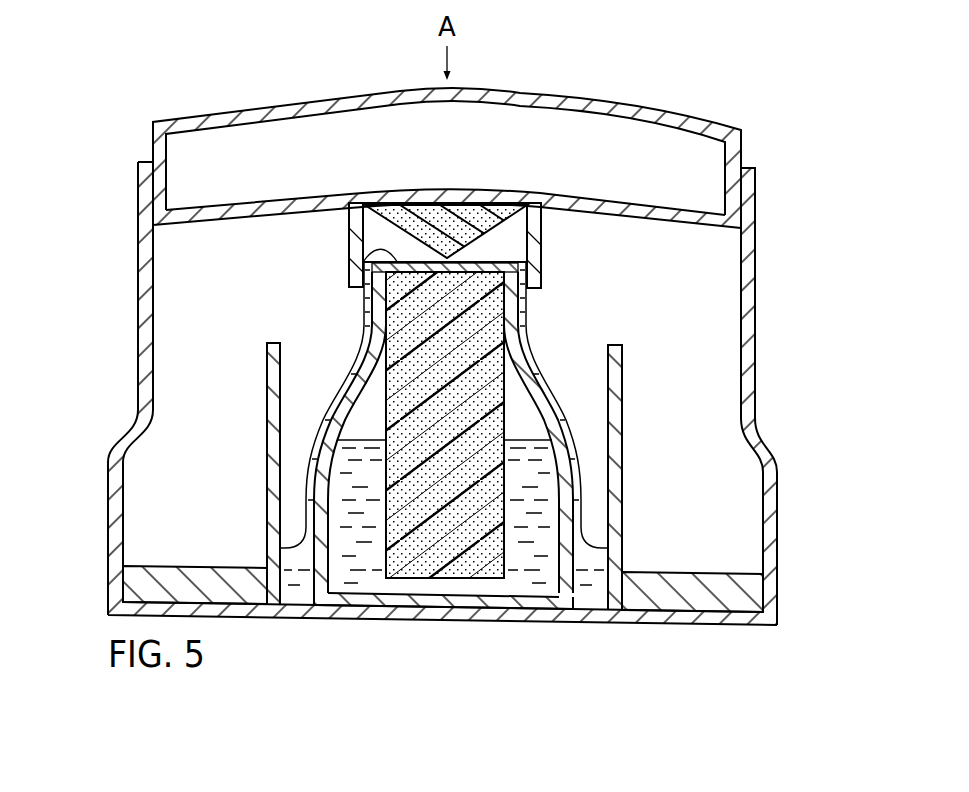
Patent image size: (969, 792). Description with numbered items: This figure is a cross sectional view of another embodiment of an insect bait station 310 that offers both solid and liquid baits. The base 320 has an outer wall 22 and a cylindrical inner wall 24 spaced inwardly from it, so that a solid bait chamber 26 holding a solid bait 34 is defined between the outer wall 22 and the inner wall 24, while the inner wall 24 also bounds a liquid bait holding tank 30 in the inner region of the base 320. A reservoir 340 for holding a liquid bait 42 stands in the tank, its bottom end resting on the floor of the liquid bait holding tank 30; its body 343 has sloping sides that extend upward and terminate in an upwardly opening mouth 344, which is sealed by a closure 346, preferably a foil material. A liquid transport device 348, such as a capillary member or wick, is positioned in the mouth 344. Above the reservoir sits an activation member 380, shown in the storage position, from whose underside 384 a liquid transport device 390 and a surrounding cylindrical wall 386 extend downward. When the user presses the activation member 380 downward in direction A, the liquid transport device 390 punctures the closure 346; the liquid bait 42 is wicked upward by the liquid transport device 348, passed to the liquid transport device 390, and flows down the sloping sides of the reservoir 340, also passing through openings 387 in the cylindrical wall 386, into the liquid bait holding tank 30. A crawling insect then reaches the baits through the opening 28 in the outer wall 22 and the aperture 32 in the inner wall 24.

The outer wall 22 is at (770, 497).
The inner wall 24 is at (620, 386).
The solid bait chamber 26 is at (723, 472).
The opening 28 is at (93, 538).
The liquid bait holding tank 30 is at (586, 348).
The aperture 32 is at (621, 520).
The solid bait 34 is at (133, 590).
The liquid bait 42 is at (371, 578).
The insect bait station 310 is at (100, 233).
The base 320 is at (87, 487).
The reservoir 340 is at (341, 596).
The body 343 is at (309, 458).
The mouth 344 is at (373, 313).
The closure 346 is at (357, 254).
The liquid transport device 348 is at (505, 363).
The activation member 380 is at (588, 99).
The underside 384 is at (238, 218).
The cylindrical wall 386 is at (543, 265).
The openings 387 is at (349, 238).
The liquid transport device 390 is at (437, 214).